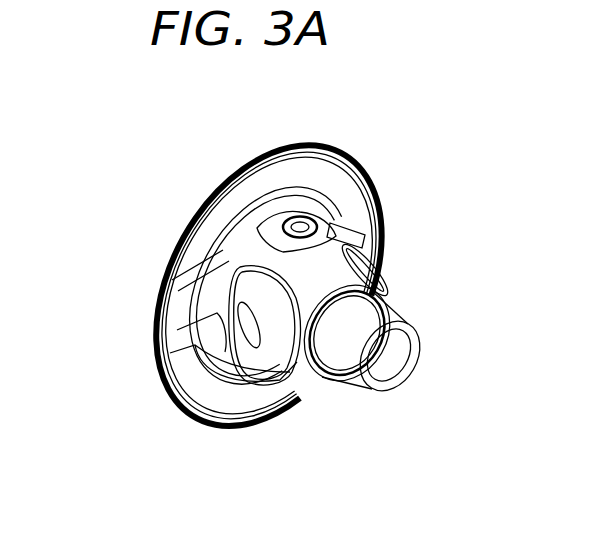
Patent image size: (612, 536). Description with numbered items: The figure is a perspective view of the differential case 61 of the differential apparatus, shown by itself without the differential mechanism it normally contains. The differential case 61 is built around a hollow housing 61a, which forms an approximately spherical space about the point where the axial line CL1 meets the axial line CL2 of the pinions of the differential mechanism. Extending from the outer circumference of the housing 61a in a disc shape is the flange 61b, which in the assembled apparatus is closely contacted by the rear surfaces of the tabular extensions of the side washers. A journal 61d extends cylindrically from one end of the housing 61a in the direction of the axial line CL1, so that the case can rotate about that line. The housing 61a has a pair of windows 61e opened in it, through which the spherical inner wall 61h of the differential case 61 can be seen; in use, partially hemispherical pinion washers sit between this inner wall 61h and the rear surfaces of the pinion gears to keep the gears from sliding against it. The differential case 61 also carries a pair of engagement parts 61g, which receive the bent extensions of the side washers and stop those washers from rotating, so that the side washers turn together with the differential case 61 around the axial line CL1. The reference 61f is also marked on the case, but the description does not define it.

The differential case 61 is at (285, 148).
The hollow housing 61a is at (232, 253).
The flange 61b is at (220, 231).
The journal 61d is at (352, 372).
The window 61e is at (255, 355).
The tooth portion 61f is at (238, 176).
The engagement part 61g is at (165, 288).
The spherical inner wall 61h is at (271, 333).
The axial line CL1 is at (383, 350).
The axial line of pinions CL2 is at (300, 236).